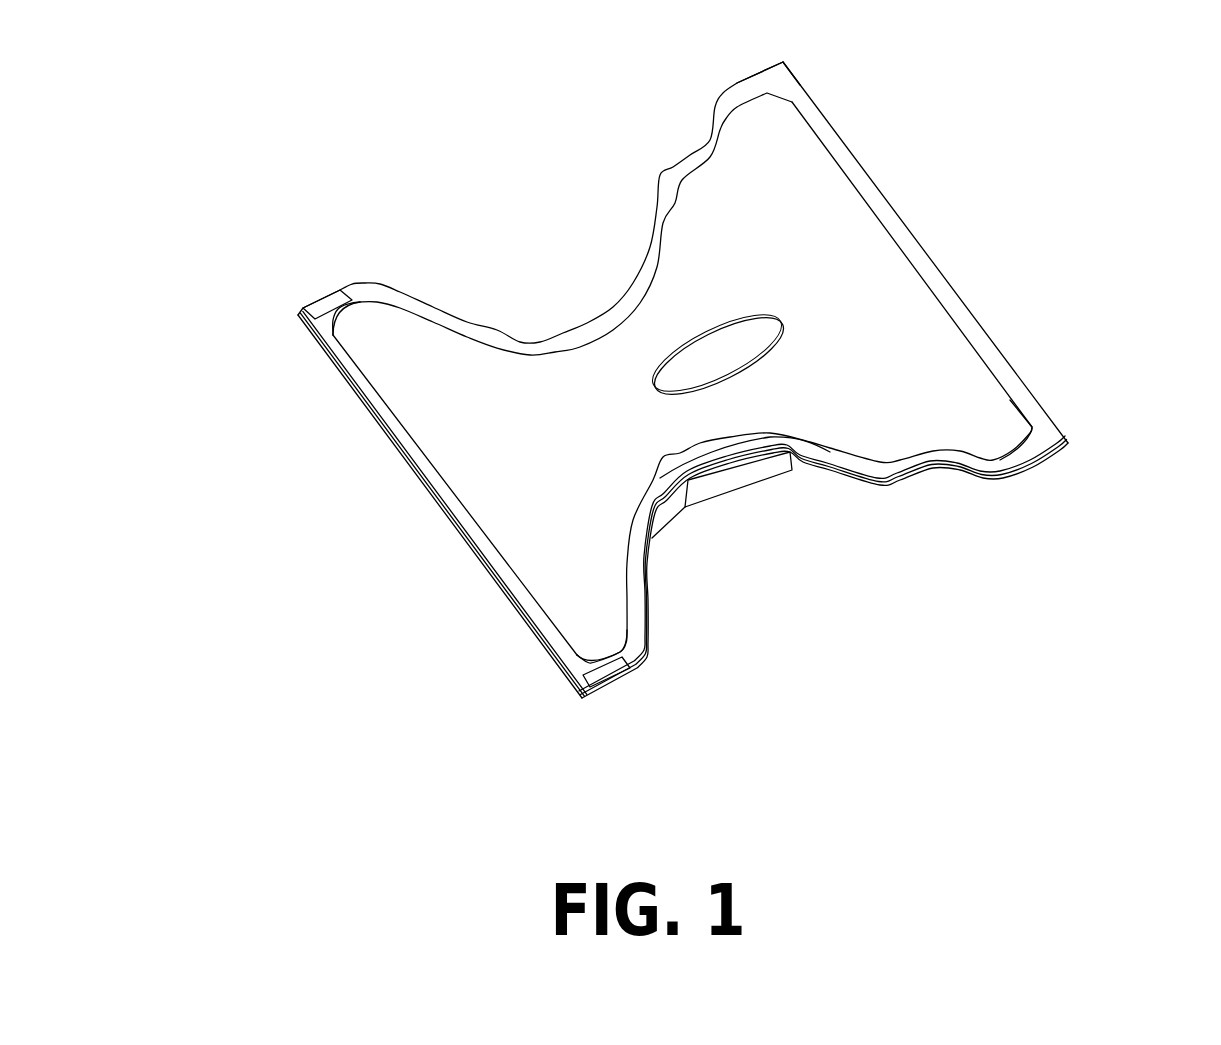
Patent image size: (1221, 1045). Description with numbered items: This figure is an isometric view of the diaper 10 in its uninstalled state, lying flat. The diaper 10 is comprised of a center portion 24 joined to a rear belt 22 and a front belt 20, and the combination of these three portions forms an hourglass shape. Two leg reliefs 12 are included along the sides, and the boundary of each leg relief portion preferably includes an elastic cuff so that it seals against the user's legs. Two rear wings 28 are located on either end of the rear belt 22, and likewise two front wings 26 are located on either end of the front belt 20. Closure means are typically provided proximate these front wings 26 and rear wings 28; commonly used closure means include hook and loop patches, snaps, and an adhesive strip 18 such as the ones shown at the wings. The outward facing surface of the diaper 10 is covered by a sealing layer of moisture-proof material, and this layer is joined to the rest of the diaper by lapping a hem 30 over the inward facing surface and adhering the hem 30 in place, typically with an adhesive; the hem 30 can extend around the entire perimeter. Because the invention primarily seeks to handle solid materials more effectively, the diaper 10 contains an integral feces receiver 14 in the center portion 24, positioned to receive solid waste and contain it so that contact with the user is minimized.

The diaper 10 is at (689, 422).
The leg relief 12 is at (577, 293).
The feces receiver 14 is at (723, 359).
The adhesive strip 18 is at (332, 300).
The front belt 20 is at (460, 505).
The rear belt 22 is at (872, 277).
The center portion 24 is at (628, 415).
The front wing 26 is at (367, 333).
The rear wing 28 is at (765, 119).
The hem 30 is at (980, 457).